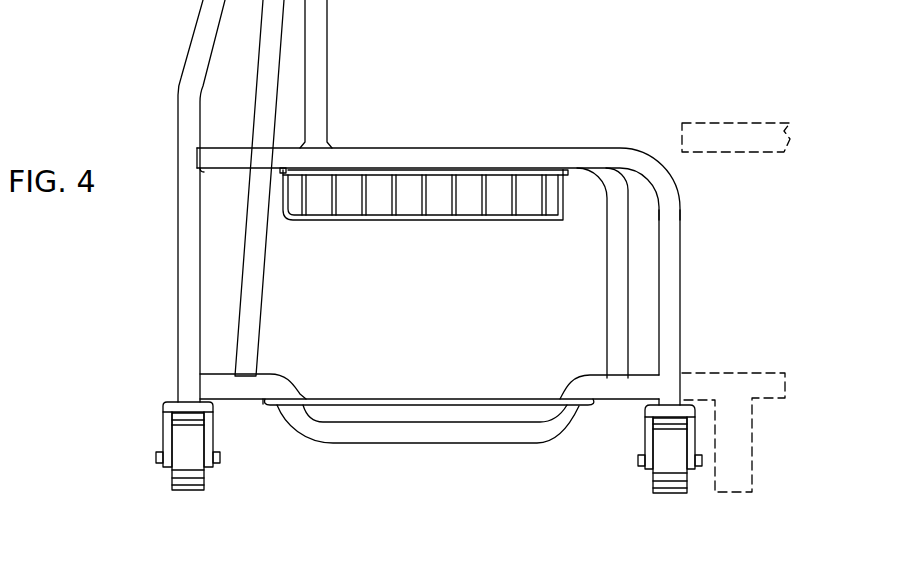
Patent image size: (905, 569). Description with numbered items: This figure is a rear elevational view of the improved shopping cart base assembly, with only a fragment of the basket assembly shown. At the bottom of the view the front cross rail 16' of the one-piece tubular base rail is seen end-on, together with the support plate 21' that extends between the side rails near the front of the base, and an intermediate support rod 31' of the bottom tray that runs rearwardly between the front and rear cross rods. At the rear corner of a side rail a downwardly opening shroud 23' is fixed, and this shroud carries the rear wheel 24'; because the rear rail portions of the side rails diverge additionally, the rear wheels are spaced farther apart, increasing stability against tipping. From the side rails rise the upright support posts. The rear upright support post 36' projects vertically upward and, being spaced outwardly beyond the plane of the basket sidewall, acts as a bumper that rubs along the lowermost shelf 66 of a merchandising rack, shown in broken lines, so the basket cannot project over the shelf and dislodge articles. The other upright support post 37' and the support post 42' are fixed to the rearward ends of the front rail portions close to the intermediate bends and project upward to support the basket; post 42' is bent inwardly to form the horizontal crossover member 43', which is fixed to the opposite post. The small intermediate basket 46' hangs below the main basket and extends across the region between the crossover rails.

The front cross rail 16' is at (428, 447).
The support plate 21' is at (428, 378).
The shroud 23' is at (722, 437).
The rear wheel 24' is at (632, 455).
The intermediate support rod 31' is at (698, 307).
The upright support post 36' is at (173, 201).
The upright support post 37' is at (275, 188).
The support post 42' is at (584, 273).
The crossover member 43' is at (438, 160).
The intermediate basket 46' is at (424, 212).
The lowermost shelf 66 is at (730, 143).